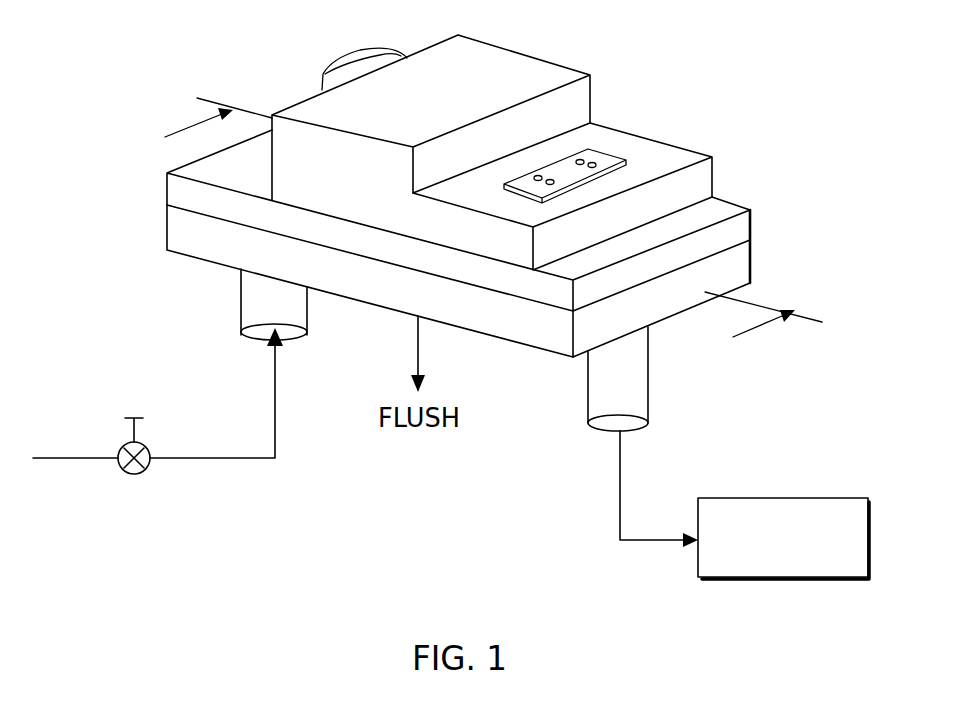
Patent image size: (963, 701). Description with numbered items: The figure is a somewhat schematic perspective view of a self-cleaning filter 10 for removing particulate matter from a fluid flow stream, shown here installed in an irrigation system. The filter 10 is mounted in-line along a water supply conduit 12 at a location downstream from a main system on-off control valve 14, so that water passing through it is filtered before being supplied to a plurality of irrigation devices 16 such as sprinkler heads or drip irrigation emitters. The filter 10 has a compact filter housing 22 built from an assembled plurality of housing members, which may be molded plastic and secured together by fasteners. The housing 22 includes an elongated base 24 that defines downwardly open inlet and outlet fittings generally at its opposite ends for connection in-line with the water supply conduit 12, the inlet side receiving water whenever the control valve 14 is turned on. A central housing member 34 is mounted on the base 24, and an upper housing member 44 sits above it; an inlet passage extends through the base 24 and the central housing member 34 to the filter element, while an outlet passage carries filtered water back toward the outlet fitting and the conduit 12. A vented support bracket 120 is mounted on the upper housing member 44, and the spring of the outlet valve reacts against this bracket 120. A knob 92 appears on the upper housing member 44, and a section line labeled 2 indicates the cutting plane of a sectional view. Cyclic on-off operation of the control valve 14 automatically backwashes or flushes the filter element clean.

The self-cleaning filter 10 is at (529, 140).
The water supply conduit 12 is at (250, 456).
The main system on-off control valve 14 is at (140, 475).
The irrigation devices 16 is at (785, 578).
The filter housing 22 is at (168, 236).
The elongated base 24 is at (523, 328).
The central housing member 34 is at (175, 190).
The upper housing member 44 is at (527, 75).
The knob 92 is at (339, 40).
The vented support bracket 120 is at (613, 163).
The section line 2- 2 is at (492, 230).